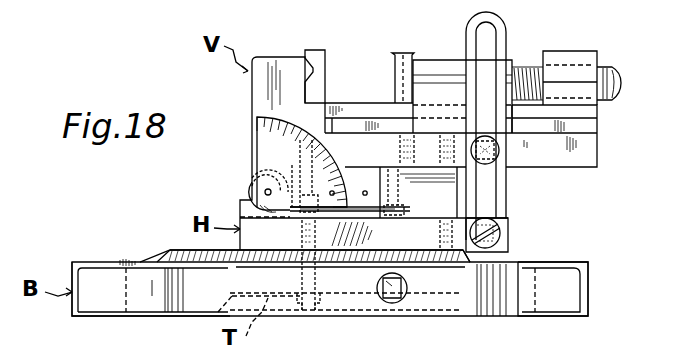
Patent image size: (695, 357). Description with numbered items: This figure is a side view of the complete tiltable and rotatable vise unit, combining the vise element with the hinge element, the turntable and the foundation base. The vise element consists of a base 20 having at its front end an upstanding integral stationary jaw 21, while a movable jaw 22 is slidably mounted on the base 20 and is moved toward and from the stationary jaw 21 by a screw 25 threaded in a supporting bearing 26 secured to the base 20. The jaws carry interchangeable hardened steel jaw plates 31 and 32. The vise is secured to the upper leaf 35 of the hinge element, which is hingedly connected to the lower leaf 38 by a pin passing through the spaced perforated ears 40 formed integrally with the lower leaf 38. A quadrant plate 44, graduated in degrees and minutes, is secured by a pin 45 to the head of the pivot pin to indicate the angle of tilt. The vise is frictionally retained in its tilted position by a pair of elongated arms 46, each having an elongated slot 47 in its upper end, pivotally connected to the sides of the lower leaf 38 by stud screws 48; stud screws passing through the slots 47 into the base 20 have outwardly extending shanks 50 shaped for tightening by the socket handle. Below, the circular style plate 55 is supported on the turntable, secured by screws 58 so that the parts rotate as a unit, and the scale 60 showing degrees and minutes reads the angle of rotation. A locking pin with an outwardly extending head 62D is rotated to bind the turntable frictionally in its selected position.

The base 20 is at (583, 153).
The stationary jaw 21 is at (264, 94).
The movable jaw 22 is at (441, 66).
The screw 25 is at (613, 76).
The supporting bearing 26 is at (553, 60).
The jaw plate 31 is at (318, 60).
The jaw plate 32 is at (396, 55).
The upper leaf 35 is at (443, 196).
The lower leaf 38 is at (506, 242).
The perforated ears 40 is at (240, 200).
The quadrant plate 44 is at (266, 144).
The pin 45 is at (266, 191).
The elongated arms 46 is at (476, 22).
The elongated slot 47 is at (487, 40).
The stud screws 48 is at (500, 226).
The shank 50 is at (499, 152).
The style plate 55 is at (170, 250).
The screws 58 is at (314, 306).
The scale 60 is at (158, 263).
The head 62D is at (400, 300).